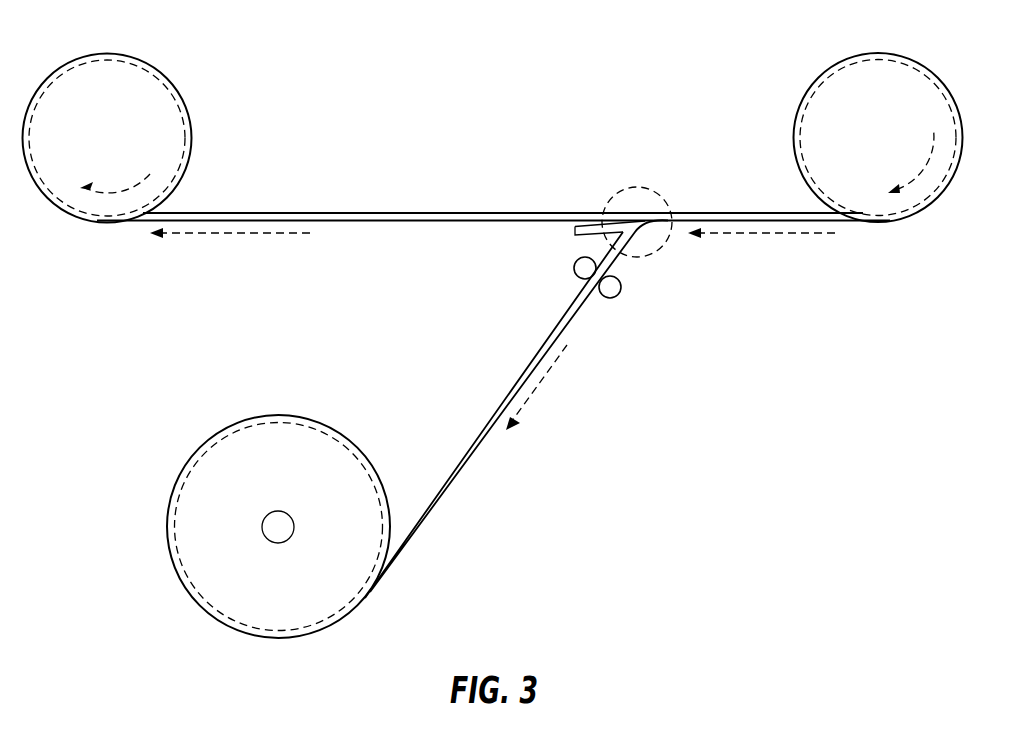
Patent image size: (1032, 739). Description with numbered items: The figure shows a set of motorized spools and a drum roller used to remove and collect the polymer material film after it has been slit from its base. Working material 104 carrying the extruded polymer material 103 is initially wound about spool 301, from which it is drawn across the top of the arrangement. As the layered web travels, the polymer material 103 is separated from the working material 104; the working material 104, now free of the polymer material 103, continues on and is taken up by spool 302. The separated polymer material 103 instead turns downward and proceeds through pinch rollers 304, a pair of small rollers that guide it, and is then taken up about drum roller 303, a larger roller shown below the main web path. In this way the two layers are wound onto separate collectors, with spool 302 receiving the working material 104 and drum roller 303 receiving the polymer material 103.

The spool 301 is at (878, 53).
The spool 302 is at (108, 53).
The drum roller 303 is at (278, 415).
The pinch rollers 304 is at (620, 295).
The working material 104 is at (441, 213).
The polymer material 103 is at (424, 521).